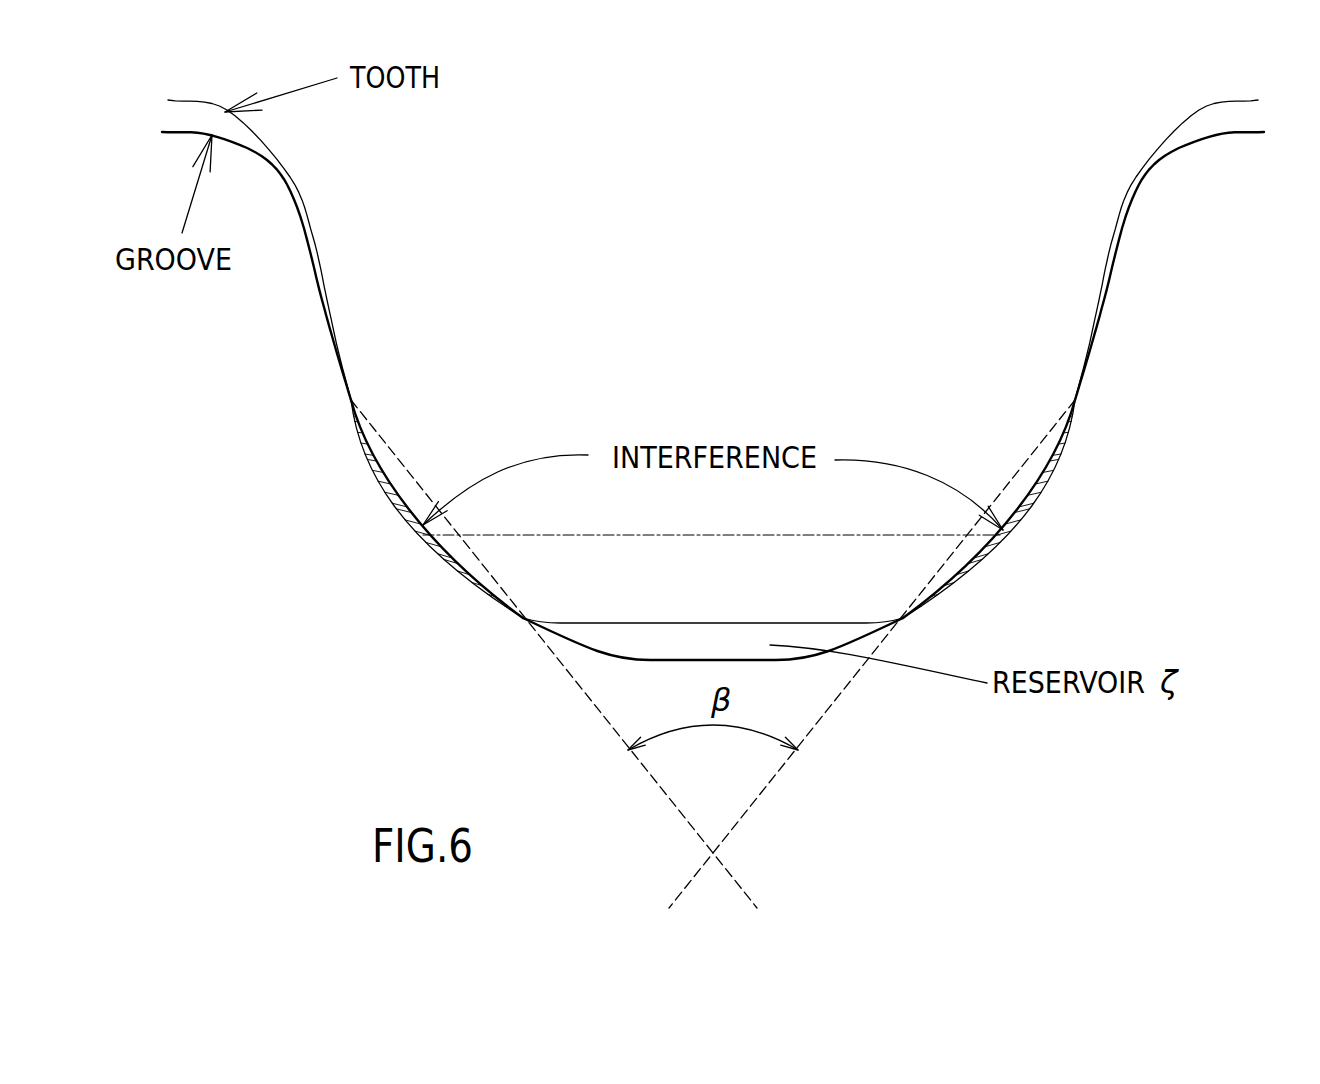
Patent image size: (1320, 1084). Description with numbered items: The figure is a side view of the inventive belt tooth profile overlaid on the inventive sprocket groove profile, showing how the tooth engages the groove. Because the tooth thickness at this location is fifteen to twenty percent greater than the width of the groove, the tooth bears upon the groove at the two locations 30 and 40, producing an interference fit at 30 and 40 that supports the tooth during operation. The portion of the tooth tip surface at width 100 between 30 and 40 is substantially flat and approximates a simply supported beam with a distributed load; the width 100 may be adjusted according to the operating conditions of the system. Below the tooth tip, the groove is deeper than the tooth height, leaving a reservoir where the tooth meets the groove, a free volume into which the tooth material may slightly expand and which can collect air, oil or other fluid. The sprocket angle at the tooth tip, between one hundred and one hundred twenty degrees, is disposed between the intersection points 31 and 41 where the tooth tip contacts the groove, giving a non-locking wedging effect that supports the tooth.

The interference fit location 40 is at (423, 526).
The interference fit location 30 is at (1015, 535).
The intersection point 41 is at (523, 618).
The intersection point 31 is at (903, 618).
The width of tooth tip surface portion 100 is at (653, 533).